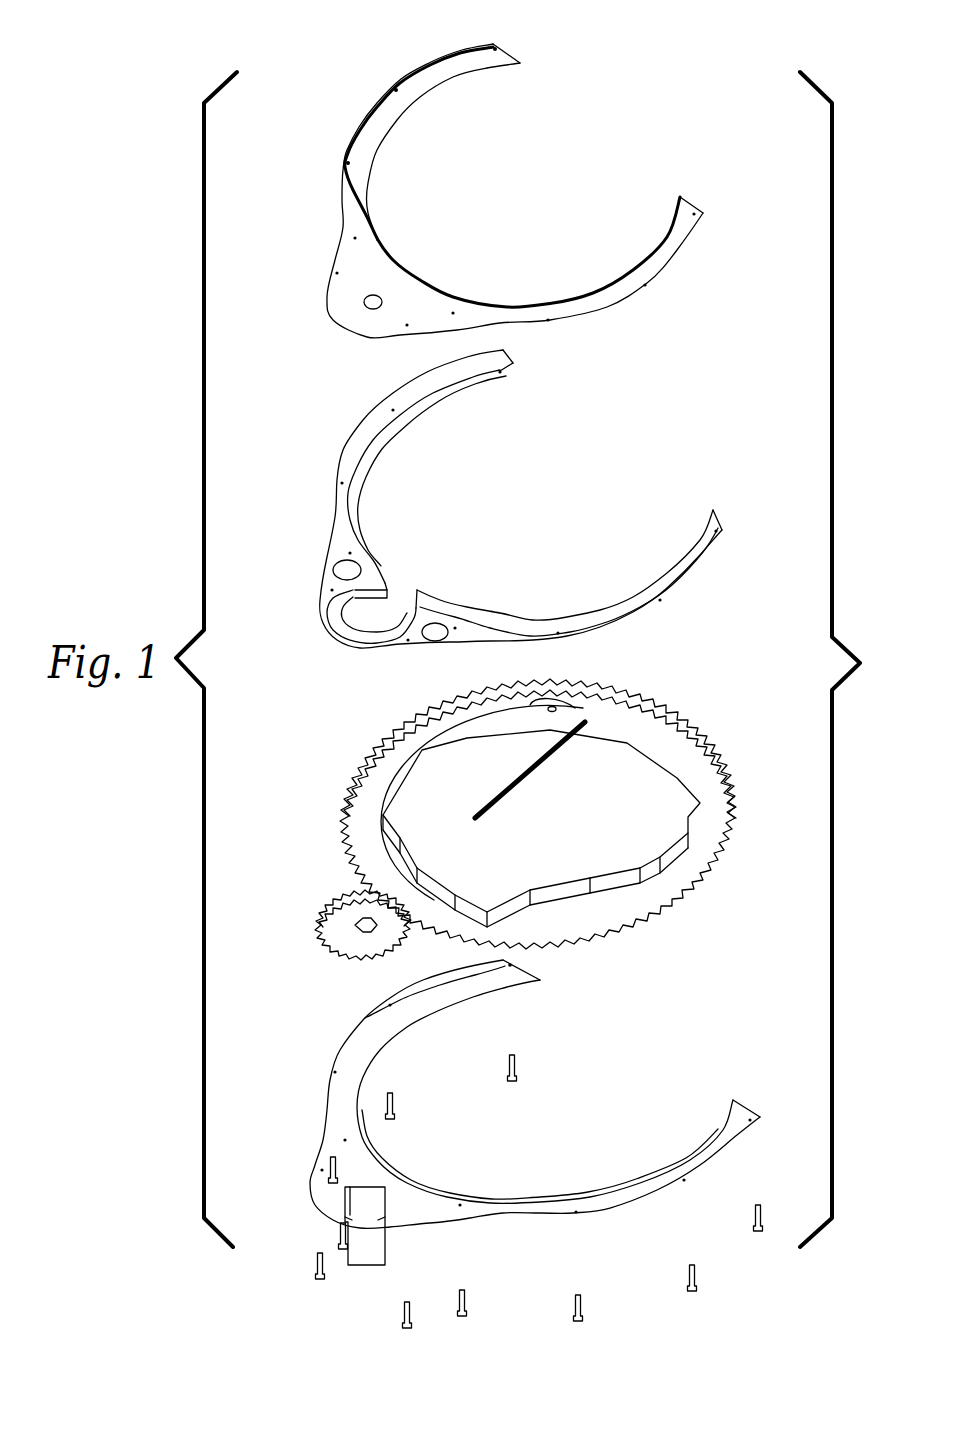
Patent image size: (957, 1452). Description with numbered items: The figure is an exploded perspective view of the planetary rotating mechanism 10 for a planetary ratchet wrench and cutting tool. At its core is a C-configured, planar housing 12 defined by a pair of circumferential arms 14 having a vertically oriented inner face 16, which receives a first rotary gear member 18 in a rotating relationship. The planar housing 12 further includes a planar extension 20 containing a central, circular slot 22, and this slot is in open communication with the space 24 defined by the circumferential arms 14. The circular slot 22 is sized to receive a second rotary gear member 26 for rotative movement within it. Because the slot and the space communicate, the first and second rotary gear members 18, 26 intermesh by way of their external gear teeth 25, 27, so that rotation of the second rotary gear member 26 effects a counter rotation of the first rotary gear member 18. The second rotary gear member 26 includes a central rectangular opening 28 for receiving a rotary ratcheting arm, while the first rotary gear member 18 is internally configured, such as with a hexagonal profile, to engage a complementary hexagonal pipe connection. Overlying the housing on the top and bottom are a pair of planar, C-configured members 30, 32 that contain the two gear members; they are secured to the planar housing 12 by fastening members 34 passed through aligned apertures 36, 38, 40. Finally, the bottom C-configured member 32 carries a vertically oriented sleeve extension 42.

The planetary rotating mechanism 10 is at (542, 659).
The planar housing 12 is at (532, 524).
The circumferential arms 14 is at (622, 440).
The inner face 16 is at (567, 573).
The first rotary gear member 18 is at (558, 707).
The planar extension 20 is at (509, 534).
The circular slot 22 is at (394, 585).
The space 24 is at (541, 696).
The external gear teeth 25 is at (591, 730).
The second rotary gear member 26 is at (320, 922).
The external gear teeth 27 is at (326, 897).
The central rectangular opening 28 is at (303, 934).
The top C-configured member 30 is at (515, 191).
The bottom C-configured member 32 is at (535, 1121).
The fastening members 34 is at (539, 1191).
The aperture 36 is at (545, 1091).
The aperture 38 is at (427, 476).
The aperture 40 is at (512, 177).
The sleeve extension 42 is at (396, 1235).